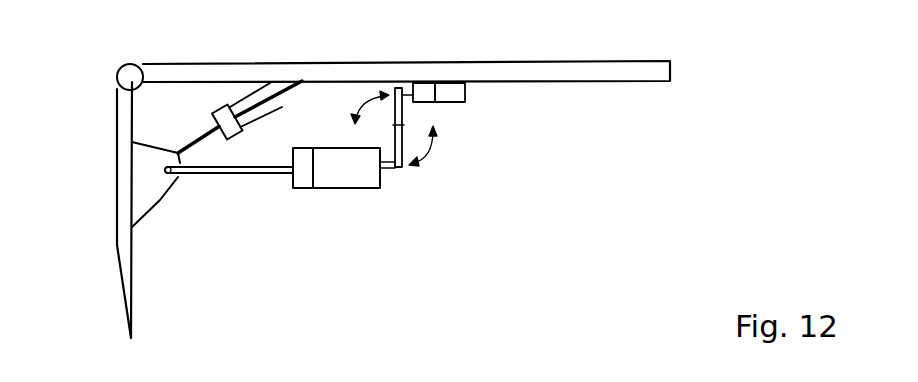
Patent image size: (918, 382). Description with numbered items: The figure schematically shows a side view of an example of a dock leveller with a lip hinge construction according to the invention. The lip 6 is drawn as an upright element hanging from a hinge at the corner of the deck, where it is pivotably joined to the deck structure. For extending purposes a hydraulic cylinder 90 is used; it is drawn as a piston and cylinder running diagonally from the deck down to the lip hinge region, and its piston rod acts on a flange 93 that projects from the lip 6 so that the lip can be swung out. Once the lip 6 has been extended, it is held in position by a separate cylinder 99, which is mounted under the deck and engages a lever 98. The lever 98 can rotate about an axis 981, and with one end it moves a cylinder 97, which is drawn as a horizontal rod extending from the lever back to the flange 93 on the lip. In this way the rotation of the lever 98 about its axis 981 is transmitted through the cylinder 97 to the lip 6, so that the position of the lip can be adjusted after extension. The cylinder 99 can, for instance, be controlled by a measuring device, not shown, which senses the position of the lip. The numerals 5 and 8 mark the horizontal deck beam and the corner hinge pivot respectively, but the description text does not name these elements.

The top bar / frame beam 5 is at (445, 62).
The pivot pin 8 is at (119, 68).
The lip 6 is at (115, 169).
The hydraulic cylinder 90 is at (182, 148).
The flange 93 is at (160, 200).
The cylinder 97 is at (262, 175).
The lever 98 is at (402, 140).
The axis 981 is at (393, 126).
The cylinder 99 is at (465, 95).